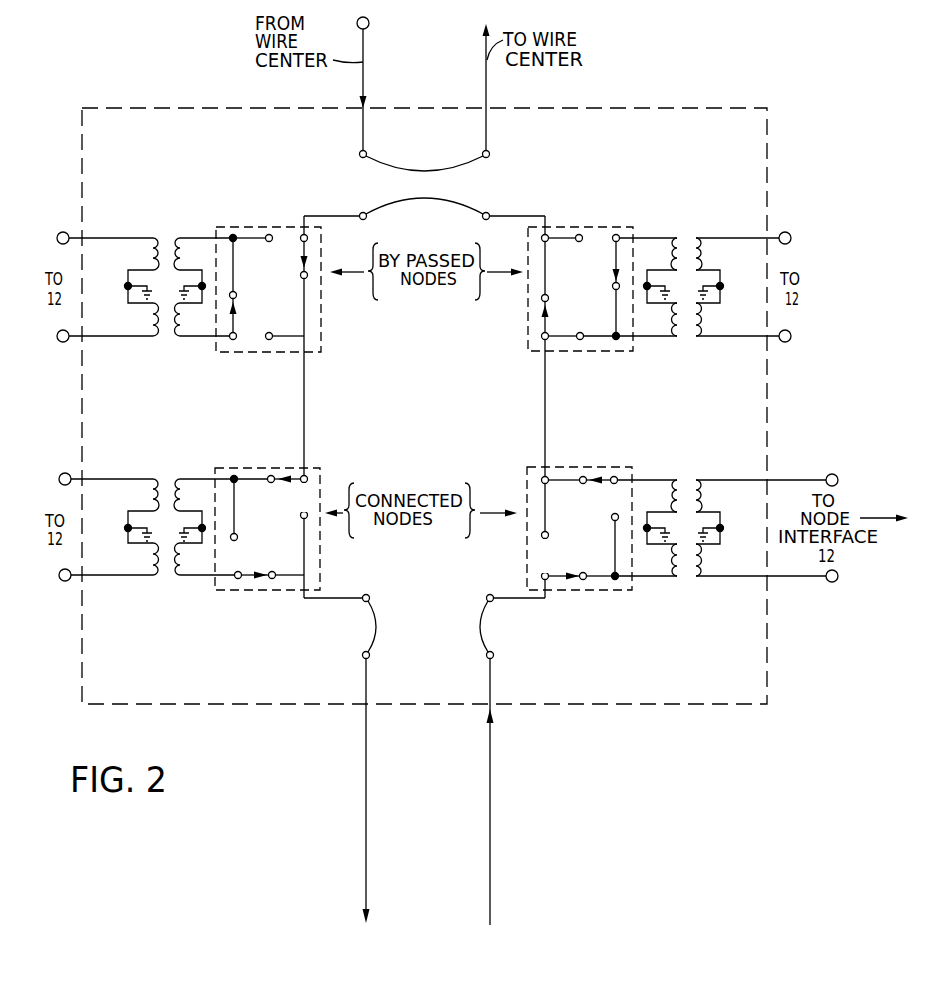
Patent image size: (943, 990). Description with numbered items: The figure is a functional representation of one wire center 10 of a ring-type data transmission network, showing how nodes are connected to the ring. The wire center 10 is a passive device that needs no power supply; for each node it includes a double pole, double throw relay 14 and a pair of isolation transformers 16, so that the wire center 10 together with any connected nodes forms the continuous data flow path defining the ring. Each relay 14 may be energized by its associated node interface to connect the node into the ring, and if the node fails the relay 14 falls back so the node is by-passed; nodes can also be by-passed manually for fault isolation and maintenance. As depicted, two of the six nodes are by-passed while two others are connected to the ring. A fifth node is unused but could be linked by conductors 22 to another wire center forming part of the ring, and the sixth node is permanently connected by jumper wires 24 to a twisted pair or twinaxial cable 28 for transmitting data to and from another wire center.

The wire center 10 is at (688, 100).
The double pole, double throw relay 14 is at (261, 226).
The isolation transformers 16 is at (139, 233).
The conductors 22 is at (365, 102).
The jumper wires 24 is at (381, 632).
The twisted pair or twinaxial cable 28 is at (367, 869).